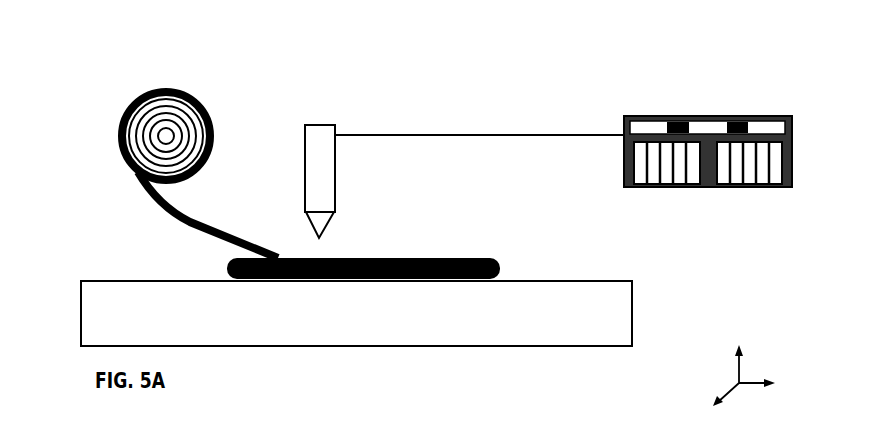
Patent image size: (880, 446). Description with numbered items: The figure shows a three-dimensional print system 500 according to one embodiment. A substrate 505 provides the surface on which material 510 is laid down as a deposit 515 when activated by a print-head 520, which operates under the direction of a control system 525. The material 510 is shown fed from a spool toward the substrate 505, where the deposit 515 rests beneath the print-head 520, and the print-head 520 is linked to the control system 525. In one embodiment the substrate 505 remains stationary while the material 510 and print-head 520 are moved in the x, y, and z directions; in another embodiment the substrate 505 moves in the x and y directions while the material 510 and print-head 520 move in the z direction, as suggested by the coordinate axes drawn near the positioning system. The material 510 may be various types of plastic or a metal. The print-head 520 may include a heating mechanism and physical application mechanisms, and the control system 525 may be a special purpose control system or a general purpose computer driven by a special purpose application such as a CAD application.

The 3D print system 500 is at (506, 76).
The substrate 505 is at (134, 280).
The material 510 is at (158, 91).
The deposit 515 is at (500, 270).
The print-head 520 is at (320, 124).
The control system 525 is at (714, 117).